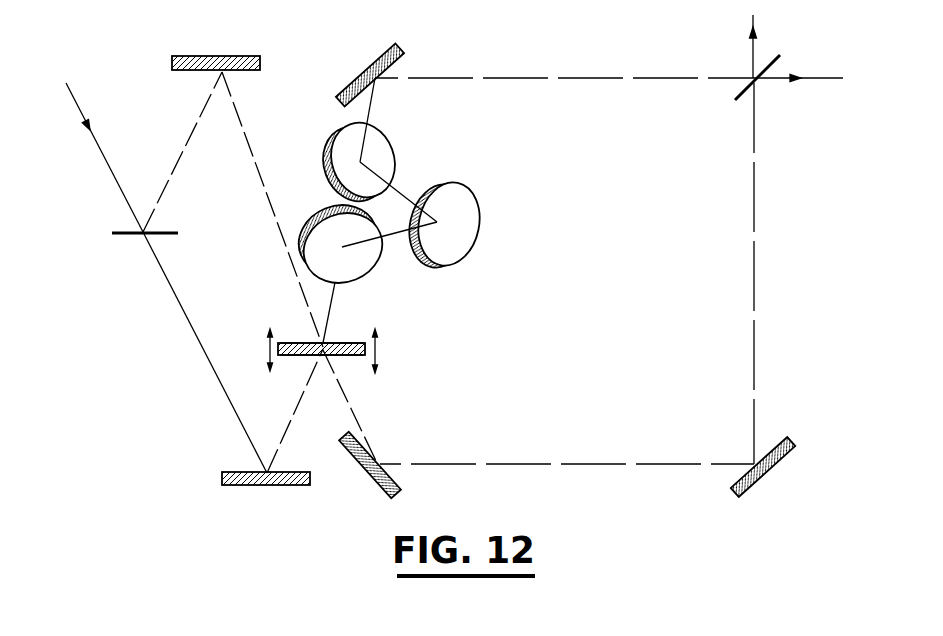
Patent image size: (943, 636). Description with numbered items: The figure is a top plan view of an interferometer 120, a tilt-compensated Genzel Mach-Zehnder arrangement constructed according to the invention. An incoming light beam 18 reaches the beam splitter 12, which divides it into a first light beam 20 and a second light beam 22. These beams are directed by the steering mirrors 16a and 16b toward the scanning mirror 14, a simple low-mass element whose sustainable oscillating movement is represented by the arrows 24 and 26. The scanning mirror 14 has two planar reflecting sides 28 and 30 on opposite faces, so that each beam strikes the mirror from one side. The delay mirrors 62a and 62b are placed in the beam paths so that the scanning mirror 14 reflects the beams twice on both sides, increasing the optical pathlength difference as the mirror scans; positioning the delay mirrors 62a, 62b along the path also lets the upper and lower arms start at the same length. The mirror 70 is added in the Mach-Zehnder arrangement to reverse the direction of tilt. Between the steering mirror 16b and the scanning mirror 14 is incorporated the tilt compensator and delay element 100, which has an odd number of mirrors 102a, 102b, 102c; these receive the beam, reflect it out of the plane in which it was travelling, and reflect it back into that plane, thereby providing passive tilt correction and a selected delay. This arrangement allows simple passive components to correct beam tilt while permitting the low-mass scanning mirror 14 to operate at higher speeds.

The beam splitter 12 is at (118, 236).
The scanning mirror 14 is at (355, 358).
The steering mirror 16a is at (198, 55).
The steering mirror 16b is at (233, 487).
The light beam 18 is at (81, 108).
The first light beam 20 is at (185, 152).
The second light beam 22 is at (175, 297).
The arrow 24 is at (378, 353).
The arrow 26 is at (268, 351).
The reflecting side 28 is at (295, 338).
The reflecting side 30 is at (300, 357).
The delay mirror 62a is at (370, 70).
The delay mirror 62b is at (377, 487).
The mirror 70 is at (768, 470).
The tilt compensator and delay element 100 is at (428, 199).
The mirror 102a is at (353, 277).
The mirror 102b is at (475, 253).
The mirror 102c is at (388, 153).
The interferometer 120 is at (570, 48).